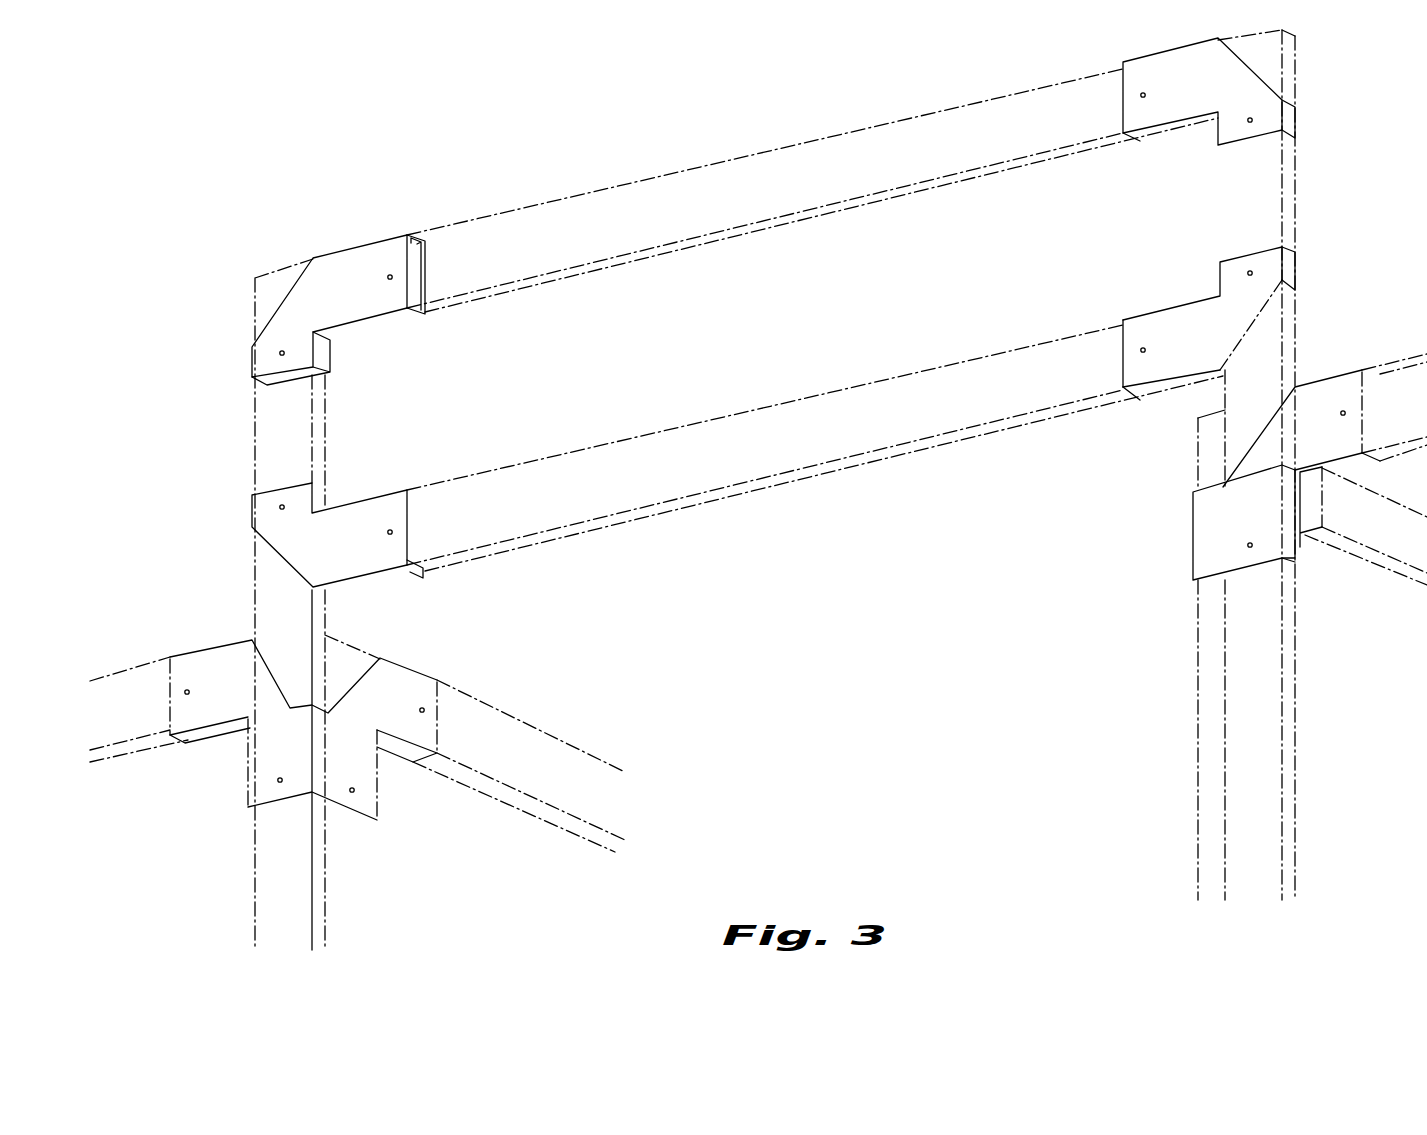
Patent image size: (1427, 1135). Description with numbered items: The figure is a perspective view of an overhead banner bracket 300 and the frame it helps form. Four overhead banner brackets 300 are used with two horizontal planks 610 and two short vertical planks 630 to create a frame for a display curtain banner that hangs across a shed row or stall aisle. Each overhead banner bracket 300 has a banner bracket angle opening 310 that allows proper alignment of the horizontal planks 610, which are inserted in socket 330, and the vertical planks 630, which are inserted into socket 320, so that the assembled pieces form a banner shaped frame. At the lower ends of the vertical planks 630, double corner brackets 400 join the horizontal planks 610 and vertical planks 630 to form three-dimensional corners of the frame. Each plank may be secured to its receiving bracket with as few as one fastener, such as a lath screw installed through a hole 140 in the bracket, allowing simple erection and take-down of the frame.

The hole 140 is at (390, 273).
The overhead banner bracket 300 is at (726, 319).
The banner bracket angle opening 310 is at (280, 298).
The socket 320 is at (292, 385).
The socket 330 is at (420, 278).
The double corner bracket 400 is at (222, 778).
The horizontal plank 610 is at (805, 140).
The vertical plank 630 is at (252, 437).